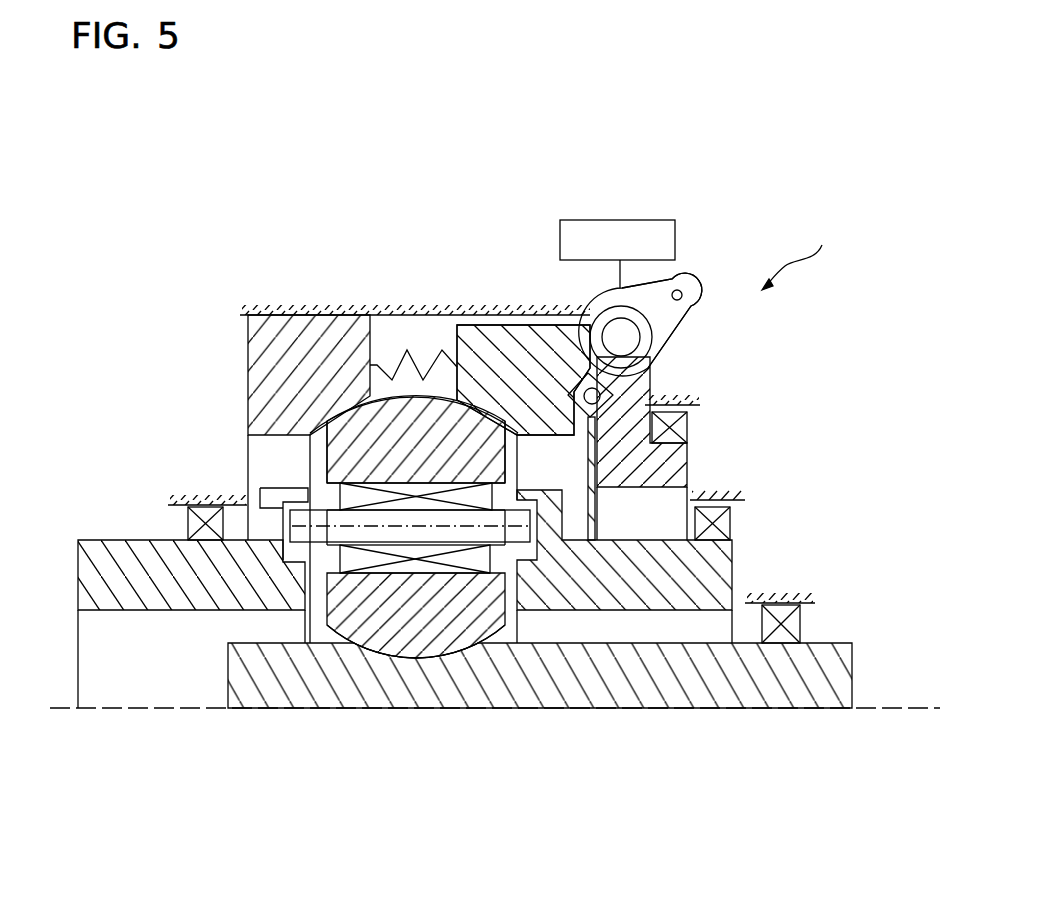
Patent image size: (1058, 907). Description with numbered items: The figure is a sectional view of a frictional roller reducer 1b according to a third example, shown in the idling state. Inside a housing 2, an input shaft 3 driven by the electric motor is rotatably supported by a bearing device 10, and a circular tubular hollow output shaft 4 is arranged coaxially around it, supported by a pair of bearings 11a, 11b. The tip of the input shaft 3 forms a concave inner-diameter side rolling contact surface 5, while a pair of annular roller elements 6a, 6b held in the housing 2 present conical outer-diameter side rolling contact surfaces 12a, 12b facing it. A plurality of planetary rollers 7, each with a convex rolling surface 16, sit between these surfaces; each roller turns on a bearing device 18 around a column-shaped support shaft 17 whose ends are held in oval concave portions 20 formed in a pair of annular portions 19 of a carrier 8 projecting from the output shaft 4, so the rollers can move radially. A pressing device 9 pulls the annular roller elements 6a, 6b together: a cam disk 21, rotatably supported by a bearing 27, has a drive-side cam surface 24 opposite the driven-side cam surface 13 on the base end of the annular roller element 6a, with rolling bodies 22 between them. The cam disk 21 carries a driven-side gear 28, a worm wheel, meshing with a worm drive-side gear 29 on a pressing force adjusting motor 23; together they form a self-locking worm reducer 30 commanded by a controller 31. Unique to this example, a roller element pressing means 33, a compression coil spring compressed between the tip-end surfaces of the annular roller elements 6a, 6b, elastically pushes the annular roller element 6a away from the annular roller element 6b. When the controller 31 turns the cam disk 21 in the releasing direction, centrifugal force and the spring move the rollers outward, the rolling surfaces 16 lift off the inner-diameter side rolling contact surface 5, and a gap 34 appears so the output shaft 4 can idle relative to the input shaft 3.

The frictional roller reducer 1b is at (802, 256).
The housing 2 is at (300, 315).
The input shaft 3 is at (775, 690).
The output shaft 4 is at (188, 612).
The inner-diameter side rolling contact surface 5 is at (447, 648).
The annular roller element 6a is at (497, 345).
The annular roller element 6b is at (272, 320).
The planetary roller 7 is at (475, 640).
The carrier 8 is at (270, 495).
The pressing device 9 is at (680, 358).
The bearing device 10 is at (802, 624).
The bearing 11a is at (732, 522).
The bearing 11b is at (190, 525).
The outer-diameter side rolling contact surface 12a is at (462, 410).
The outer-diameter side rolling contact surface 12b is at (354, 420).
The driven-side cam surface 13 is at (505, 340).
The rolling surface 16 is at (362, 410).
The support shaft 17 is at (519, 565).
The bearing device 18 is at (352, 580).
The annular portion 19 is at (740, 497).
The concave portion 20 is at (292, 556).
The cam disk 21 is at (690, 460).
The rolling body 22 is at (589, 405).
The pressing force adjusting motor 23 is at (645, 288).
The drive-side cam surface 24 is at (612, 400).
The bearing 27 is at (689, 428).
The driven-side gear 28 is at (655, 355).
The drive-side gear 29 is at (655, 325).
The worm reducer 30 is at (685, 293).
The controller 31 is at (676, 248).
The roller element pressing means 33 is at (408, 352).
The gap 34 is at (378, 658).